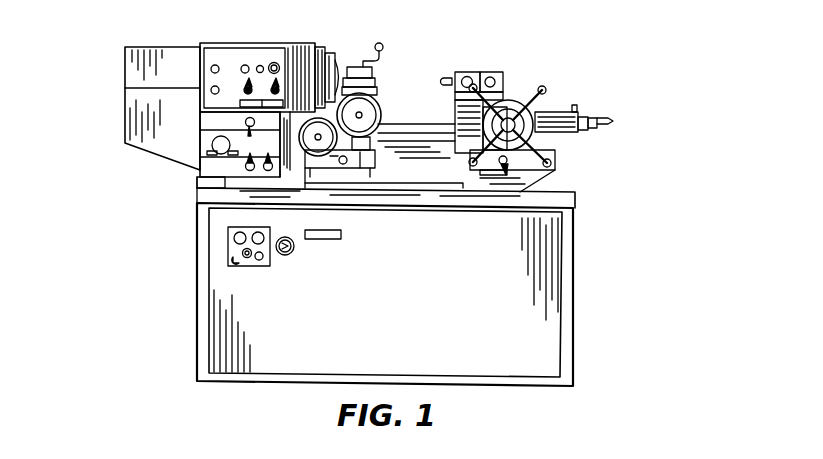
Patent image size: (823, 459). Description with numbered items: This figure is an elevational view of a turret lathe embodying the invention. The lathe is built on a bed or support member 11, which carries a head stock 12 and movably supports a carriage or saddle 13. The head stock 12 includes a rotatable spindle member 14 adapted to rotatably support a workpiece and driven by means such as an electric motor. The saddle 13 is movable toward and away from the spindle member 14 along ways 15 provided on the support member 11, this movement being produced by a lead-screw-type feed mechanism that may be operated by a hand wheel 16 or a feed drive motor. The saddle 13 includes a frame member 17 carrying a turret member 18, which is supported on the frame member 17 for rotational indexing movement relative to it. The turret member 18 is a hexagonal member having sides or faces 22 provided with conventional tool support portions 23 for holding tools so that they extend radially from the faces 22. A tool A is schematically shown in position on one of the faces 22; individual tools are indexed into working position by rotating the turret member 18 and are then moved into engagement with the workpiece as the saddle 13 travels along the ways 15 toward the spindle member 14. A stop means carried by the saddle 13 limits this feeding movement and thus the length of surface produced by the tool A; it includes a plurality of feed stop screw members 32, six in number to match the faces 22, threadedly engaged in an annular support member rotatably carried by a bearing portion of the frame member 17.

The bed 11 is at (581, 256).
The head stock 12 is at (201, 31).
The carriage 13 is at (513, 84).
The spindle member 14 is at (334, 63).
The ways 15 is at (388, 125).
The hand wheel 16 is at (546, 179).
The frame member 17 is at (540, 86).
The turret member 18 is at (473, 72).
The faces 22 is at (452, 73).
The tool support portions 23 is at (497, 72).
The feed stop screw members 32 is at (614, 121).
The tool A is at (444, 81).